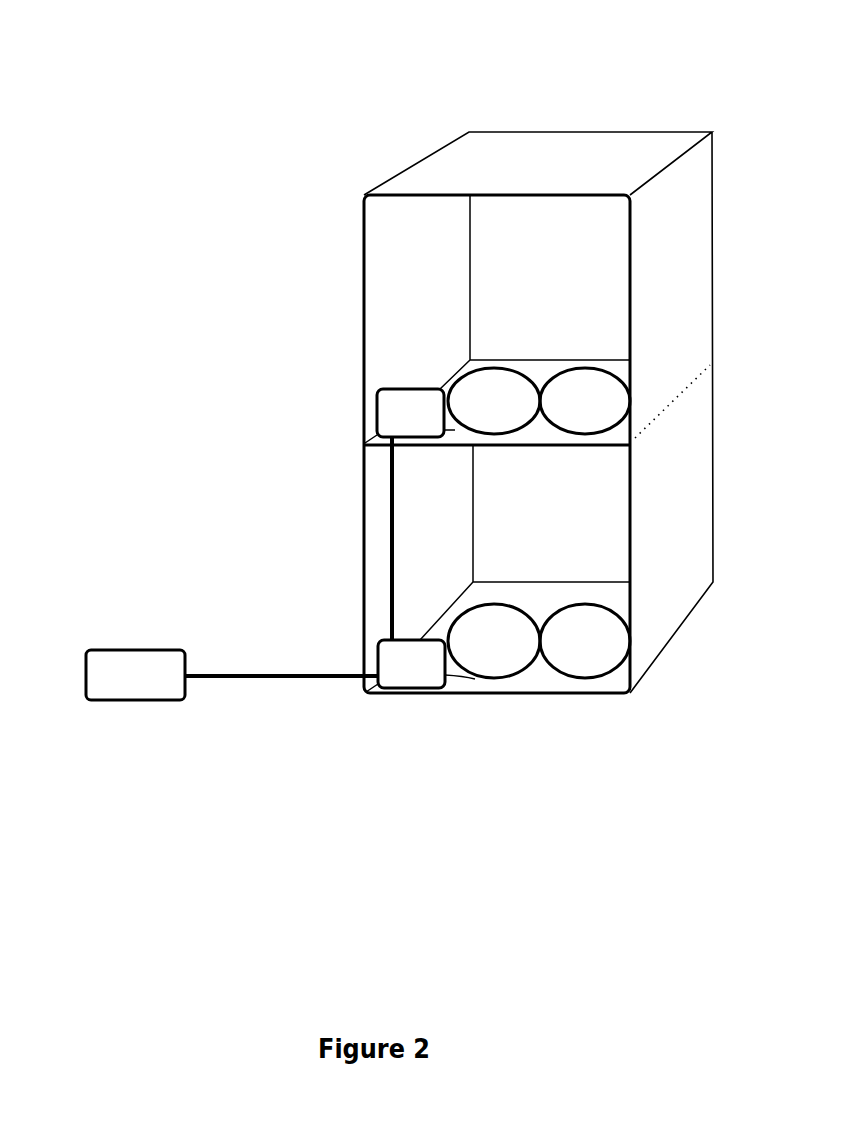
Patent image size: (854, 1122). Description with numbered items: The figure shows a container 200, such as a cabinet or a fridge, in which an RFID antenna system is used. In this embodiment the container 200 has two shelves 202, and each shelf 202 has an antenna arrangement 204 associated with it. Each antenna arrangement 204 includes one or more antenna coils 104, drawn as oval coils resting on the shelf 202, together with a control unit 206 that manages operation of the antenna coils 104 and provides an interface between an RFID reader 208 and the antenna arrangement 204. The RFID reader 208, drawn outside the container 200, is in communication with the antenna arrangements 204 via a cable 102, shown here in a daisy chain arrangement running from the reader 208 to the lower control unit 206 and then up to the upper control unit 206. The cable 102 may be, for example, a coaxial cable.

The container 200 is at (298, 123).
The shelf 202 is at (565, 448).
The antenna coil 104 is at (494, 368).
The antenna arrangement 204 is at (328, 414).
The control unit 206 is at (413, 694).
The RFID reader 208 is at (135, 702).
The cable 102 is at (390, 563).